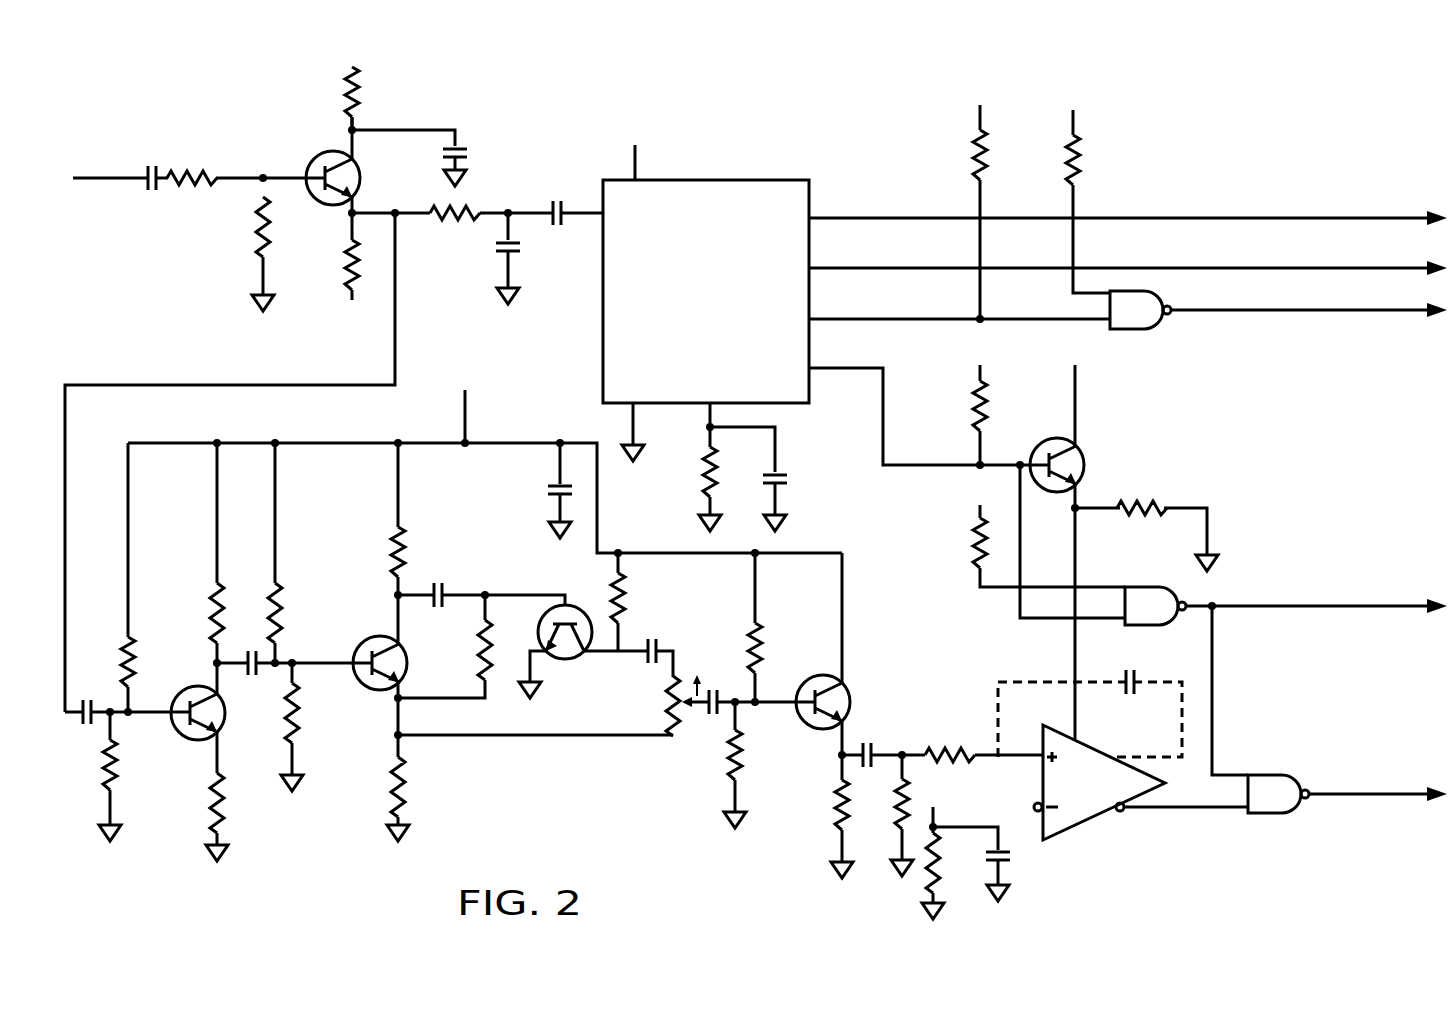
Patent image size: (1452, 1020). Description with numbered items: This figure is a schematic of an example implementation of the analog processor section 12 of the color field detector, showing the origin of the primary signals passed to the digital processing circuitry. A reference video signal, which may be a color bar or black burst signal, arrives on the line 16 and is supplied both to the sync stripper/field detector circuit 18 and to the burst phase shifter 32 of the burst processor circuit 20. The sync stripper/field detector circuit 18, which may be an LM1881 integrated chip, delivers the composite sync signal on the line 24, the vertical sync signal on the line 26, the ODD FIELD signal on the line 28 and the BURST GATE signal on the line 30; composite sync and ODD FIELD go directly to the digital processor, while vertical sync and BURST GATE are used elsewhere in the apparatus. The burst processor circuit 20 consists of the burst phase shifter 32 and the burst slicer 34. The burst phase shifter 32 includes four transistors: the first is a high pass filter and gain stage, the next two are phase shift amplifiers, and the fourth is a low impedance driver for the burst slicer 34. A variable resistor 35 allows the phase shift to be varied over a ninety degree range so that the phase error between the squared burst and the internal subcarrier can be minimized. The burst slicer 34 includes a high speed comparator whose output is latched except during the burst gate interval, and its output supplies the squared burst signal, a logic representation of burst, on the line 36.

The analog processor section 12 is at (756, 481).
The line 16 is at (103, 180).
The sync stripper/field detector circuit 18 is at (730, 176).
The burst processor circuit 20 is at (890, 898).
The line 24 is at (1128, 218).
The line 26 is at (1125, 268).
The line 28 is at (1322, 313).
The line 30 is at (1333, 608).
The burst phase shifter 32 is at (519, 760).
The burst slicer 34 is at (1166, 831).
The variable resistor 35 is at (682, 720).
The line 36 is at (1333, 796).